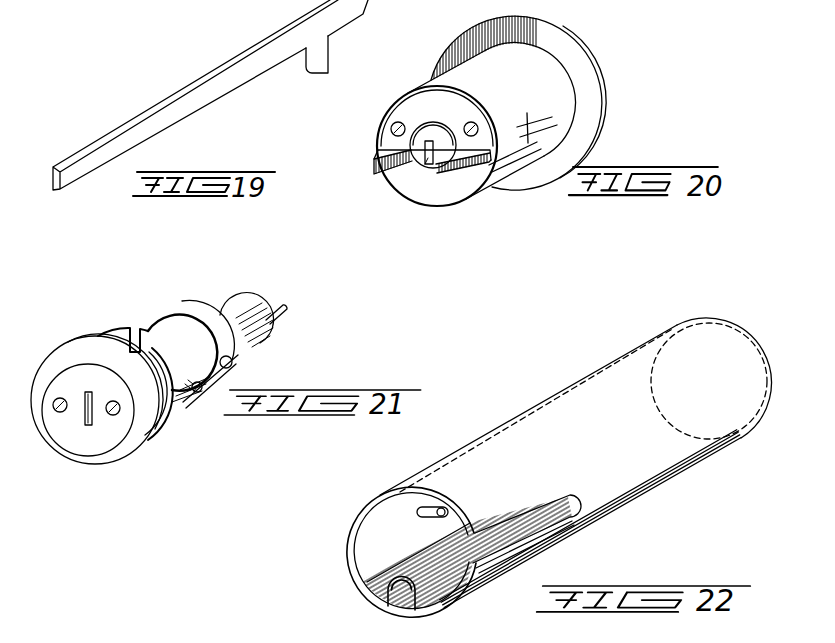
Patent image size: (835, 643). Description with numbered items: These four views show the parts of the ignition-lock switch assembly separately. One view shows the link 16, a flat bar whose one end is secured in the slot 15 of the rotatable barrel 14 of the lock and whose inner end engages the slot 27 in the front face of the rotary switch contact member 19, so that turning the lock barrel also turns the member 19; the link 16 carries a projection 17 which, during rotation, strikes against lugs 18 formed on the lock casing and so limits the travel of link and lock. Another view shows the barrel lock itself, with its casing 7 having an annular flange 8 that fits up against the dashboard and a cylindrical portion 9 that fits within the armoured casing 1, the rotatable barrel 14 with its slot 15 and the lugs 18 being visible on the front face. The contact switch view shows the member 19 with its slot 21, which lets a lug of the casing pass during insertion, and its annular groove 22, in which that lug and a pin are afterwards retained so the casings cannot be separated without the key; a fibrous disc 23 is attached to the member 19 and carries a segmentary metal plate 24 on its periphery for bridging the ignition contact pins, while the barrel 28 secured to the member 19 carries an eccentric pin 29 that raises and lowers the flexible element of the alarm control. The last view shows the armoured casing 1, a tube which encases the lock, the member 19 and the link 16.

In FIG. 22, the armoured casing 1 is at (623, 490).
In FIG. 20, the lock casing 7 is at (468, 182).
In FIG. 20, the annular flange 8 is at (599, 116).
In FIG. 20, the cylindrical portion 9 is at (513, 188).
In FIG. 20, the rotatable barrel 14 is at (416, 155).
In FIG. 20, the slot 15 is at (427, 172).
In FIG. 19, the link 16 is at (227, 80).
In FIG. 19, the projection 17 is at (322, 60).
In FIG. 20, the lugs 18 is at (457, 168).
In FIG. 21, the rotary switch contact member 19 is at (110, 425).
In FIG. 21, the slot 21 is at (138, 337).
In FIG. 21, the annular groove 22 is at (157, 410).
In FIG. 21, the fibrous disc 23 is at (195, 318).
In FIG. 21, the segmentary metal plate 24 is at (233, 364).
In FIG. 21, the slot 27 is at (82, 425).
In FIG. 21, the barrel 28 is at (233, 322).
In FIG. 21, the pin 29 is at (277, 310).